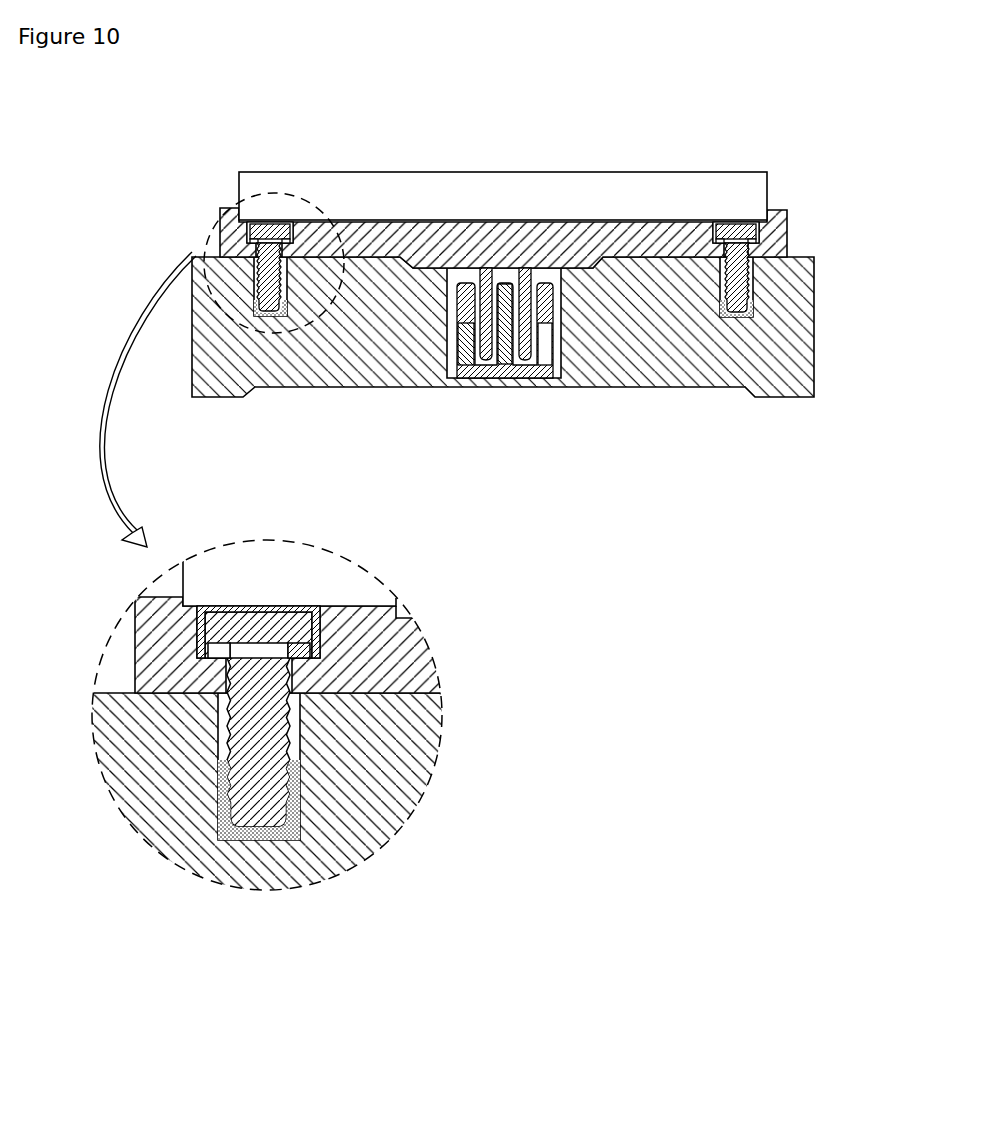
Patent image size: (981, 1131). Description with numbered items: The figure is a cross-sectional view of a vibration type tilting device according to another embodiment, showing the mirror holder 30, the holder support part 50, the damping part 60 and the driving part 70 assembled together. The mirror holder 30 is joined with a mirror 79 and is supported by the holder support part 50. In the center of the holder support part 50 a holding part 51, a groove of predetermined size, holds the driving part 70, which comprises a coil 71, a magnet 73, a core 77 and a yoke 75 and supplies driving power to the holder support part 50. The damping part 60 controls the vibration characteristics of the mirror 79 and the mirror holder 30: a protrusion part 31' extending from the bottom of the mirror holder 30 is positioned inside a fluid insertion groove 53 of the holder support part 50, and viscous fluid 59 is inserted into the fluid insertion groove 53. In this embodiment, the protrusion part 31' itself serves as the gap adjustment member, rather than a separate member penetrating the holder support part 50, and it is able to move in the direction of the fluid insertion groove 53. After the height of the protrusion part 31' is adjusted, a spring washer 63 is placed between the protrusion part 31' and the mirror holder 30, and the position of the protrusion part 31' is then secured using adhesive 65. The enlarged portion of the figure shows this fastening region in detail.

The mirror holder 30 is at (218, 233).
The protrusion part 31' is at (486, 599).
The holder support part 50 is at (679, 388).
The holding part 51 is at (448, 370).
The fluid insertion groove 53 is at (755, 272).
The viscous fluid 59 is at (756, 304).
The damping part 60 is at (153, 258).
The spring washer 63 is at (210, 656).
The adhesive 65 is at (200, 619).
The driving part 70 is at (477, 422).
The coil 71 is at (477, 366).
The magnet 73 is at (562, 370).
The yoke 75 is at (458, 298).
The core 77 is at (520, 366).
The mirror 79 is at (329, 180).